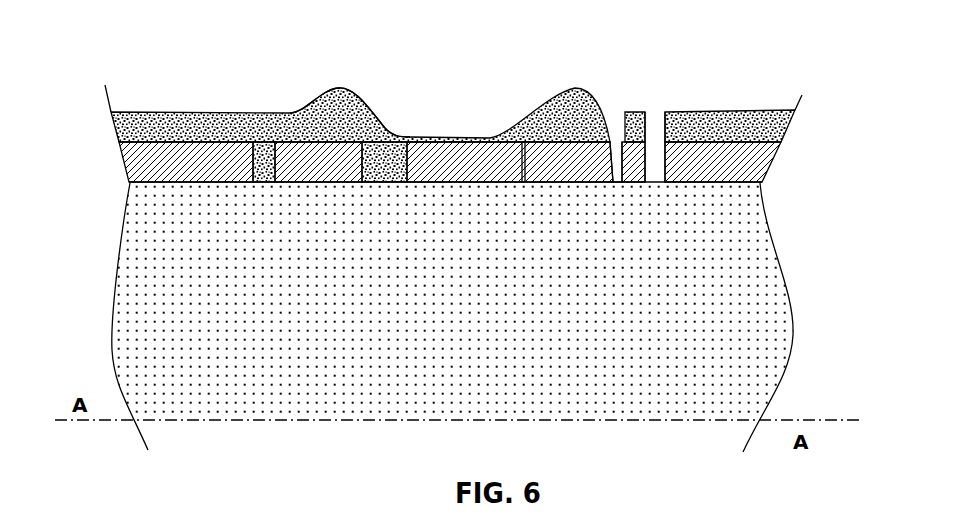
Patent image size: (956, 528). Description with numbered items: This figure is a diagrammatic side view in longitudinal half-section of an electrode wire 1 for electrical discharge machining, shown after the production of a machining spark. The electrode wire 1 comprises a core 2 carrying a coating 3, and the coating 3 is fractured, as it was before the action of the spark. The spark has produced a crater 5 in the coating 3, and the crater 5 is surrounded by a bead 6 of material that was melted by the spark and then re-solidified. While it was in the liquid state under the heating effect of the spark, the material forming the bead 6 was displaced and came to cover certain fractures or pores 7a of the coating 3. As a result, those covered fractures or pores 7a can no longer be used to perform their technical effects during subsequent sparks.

The electrode wire 1 is at (80, 153).
The core 2 is at (777, 322).
The coating 3 is at (763, 172).
The crater 5 is at (458, 138).
The bead 6 is at (345, 92).
The fractures or pores 7a is at (262, 143).